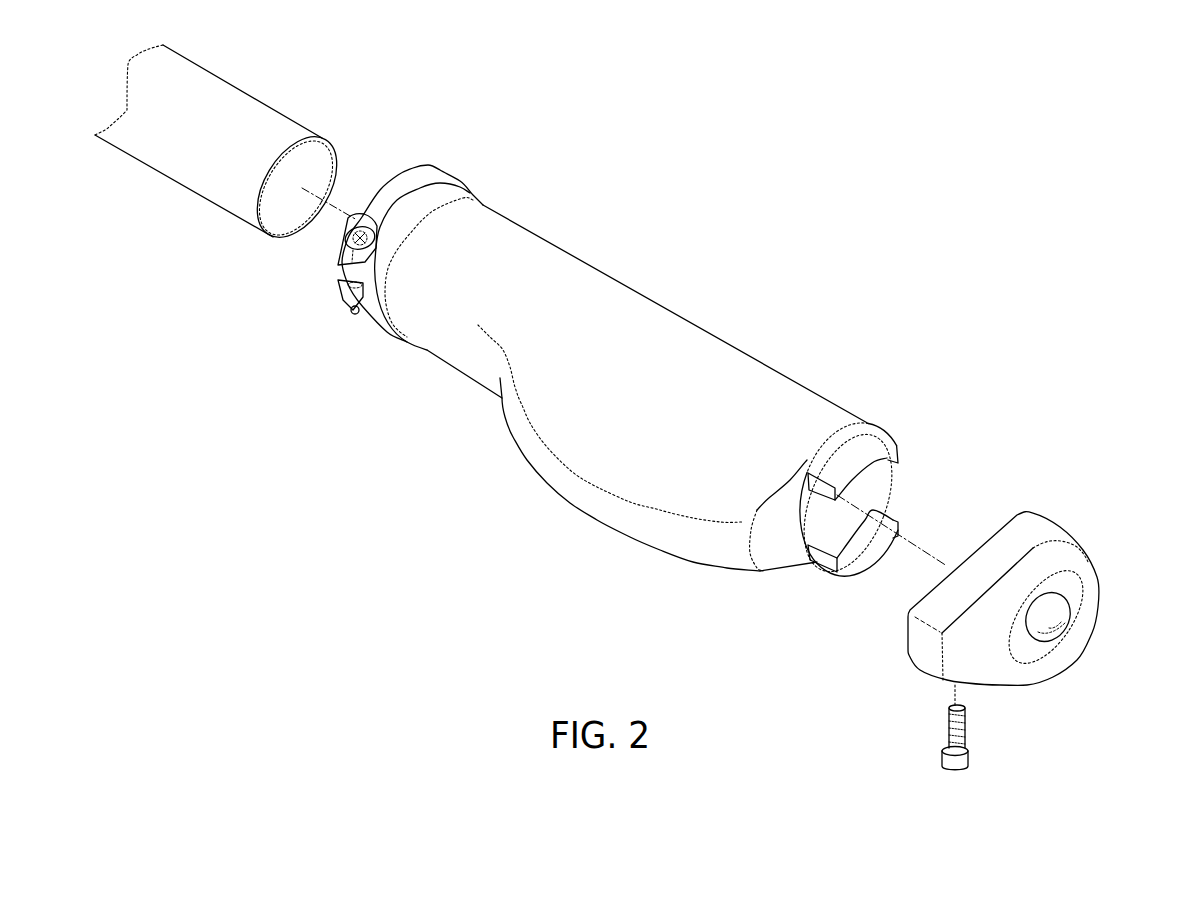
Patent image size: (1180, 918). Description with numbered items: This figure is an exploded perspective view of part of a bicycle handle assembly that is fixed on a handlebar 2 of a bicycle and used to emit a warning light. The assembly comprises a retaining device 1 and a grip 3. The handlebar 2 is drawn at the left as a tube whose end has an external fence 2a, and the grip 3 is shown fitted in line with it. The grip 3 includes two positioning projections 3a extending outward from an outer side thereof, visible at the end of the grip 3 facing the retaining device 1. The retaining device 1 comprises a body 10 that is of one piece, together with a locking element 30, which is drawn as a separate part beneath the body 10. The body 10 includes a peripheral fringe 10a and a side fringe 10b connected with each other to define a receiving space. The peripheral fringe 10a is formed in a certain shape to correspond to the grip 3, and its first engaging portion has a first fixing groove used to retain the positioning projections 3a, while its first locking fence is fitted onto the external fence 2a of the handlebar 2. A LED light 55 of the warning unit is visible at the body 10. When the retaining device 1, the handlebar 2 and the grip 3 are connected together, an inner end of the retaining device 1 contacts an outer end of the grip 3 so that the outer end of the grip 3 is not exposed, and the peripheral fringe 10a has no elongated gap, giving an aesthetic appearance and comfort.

The retaining device 1 is at (1045, 495).
The handlebar 2 is at (210, 205).
The external fence 2a is at (287, 128).
The grip 3 is at (692, 294).
The positioning projections 3a is at (868, 442).
The body 10 is at (903, 630).
The peripheral fringe 10a is at (987, 552).
The side fringe 10b is at (1000, 665).
The LED light 55 is at (1072, 610).
The locking element 30 is at (941, 723).